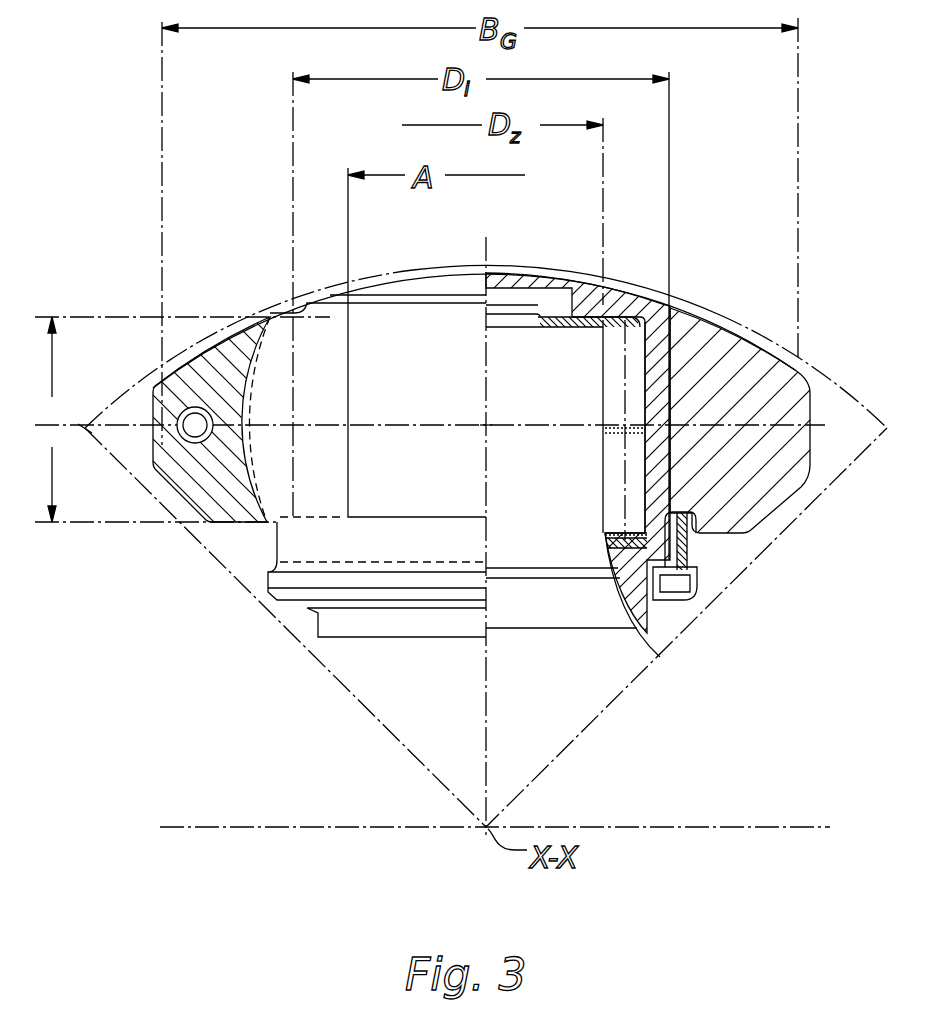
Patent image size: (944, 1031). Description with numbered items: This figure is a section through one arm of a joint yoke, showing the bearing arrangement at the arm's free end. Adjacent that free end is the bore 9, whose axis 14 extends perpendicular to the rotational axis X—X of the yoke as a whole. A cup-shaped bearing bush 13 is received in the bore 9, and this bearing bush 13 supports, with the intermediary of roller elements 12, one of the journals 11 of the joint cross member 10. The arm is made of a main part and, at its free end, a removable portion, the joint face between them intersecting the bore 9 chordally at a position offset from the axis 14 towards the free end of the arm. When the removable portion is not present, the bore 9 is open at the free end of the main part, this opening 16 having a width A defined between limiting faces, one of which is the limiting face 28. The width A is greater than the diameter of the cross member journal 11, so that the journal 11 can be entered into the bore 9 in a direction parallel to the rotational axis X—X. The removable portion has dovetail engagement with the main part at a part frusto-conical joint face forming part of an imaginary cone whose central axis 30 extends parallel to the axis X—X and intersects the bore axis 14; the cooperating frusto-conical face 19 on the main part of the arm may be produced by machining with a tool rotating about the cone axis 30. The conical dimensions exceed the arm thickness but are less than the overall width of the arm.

The bore 9 is at (663, 343).
The joint cross member 10 is at (430, 703).
The journal 11 is at (552, 400).
The roller elements 12 is at (615, 407).
The cup-shaped bearing bush 13 is at (670, 380).
The axis of the bore 14 is at (487, 692).
The opening 16 is at (418, 335).
The frusto-conical face 19 is at (243, 453).
The limiting face 28 is at (363, 440).
The cone axis 30 is at (481, 428).